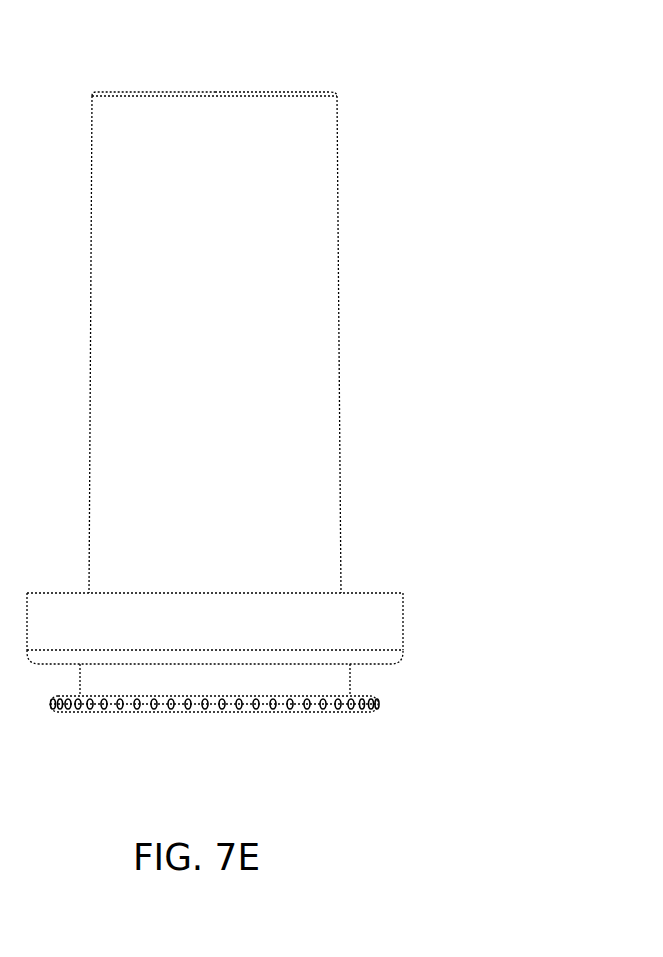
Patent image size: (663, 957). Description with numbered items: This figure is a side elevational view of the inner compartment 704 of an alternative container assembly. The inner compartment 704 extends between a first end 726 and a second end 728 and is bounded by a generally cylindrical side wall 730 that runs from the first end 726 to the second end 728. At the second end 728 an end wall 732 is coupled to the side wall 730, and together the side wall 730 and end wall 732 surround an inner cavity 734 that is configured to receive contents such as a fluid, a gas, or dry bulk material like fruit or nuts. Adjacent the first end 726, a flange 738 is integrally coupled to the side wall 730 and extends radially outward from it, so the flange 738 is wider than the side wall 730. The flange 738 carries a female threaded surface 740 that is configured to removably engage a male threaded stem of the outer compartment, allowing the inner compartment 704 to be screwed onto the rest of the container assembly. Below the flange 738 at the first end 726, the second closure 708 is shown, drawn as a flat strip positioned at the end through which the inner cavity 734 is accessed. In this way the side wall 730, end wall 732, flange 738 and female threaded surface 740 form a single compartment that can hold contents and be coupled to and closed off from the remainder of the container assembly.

The inner compartment 704 is at (388, 430).
The second closure 708 is at (337, 713).
The first end 726 is at (360, 670).
The second end 728 is at (327, 94).
The side wall 730 is at (340, 267).
The end wall 732 is at (128, 94).
The inner cavity 734 is at (303, 180).
The flange 738 is at (403, 618).
The female threaded surface 740 is at (385, 593).